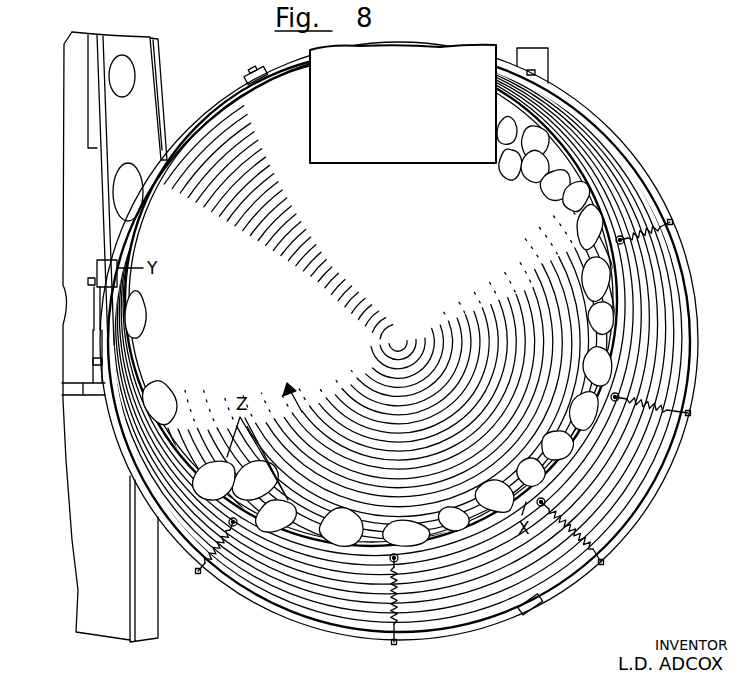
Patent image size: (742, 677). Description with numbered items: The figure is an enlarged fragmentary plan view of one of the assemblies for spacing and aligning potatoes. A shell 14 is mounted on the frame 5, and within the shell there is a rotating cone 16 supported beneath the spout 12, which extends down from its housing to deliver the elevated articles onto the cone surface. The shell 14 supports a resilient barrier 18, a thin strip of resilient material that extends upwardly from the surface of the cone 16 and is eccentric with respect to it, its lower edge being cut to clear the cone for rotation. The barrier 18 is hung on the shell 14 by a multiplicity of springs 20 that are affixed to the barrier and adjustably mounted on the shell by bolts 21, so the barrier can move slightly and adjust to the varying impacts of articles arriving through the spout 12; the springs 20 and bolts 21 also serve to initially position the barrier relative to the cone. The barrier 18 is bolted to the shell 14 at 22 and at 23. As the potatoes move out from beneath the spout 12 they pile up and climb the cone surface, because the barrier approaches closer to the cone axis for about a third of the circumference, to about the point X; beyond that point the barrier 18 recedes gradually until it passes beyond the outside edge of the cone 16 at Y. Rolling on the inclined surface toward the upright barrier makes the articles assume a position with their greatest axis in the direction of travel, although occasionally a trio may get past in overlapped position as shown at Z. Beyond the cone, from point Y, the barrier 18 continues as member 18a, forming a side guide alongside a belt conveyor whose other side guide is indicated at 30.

The frame 5 is at (542, 61).
The spout 12 is at (400, 116).
The shell 14 is at (595, 123).
The rotating cone 16 is at (448, 266).
The resilient barrier 18 is at (580, 163).
The member 18a is at (100, 118).
The spring 20 is at (660, 234).
The bolt 21 is at (673, 224).
The bolted point 22 is at (254, 64).
The bolted point 23 is at (95, 276).
The side guide 30 is at (166, 106).